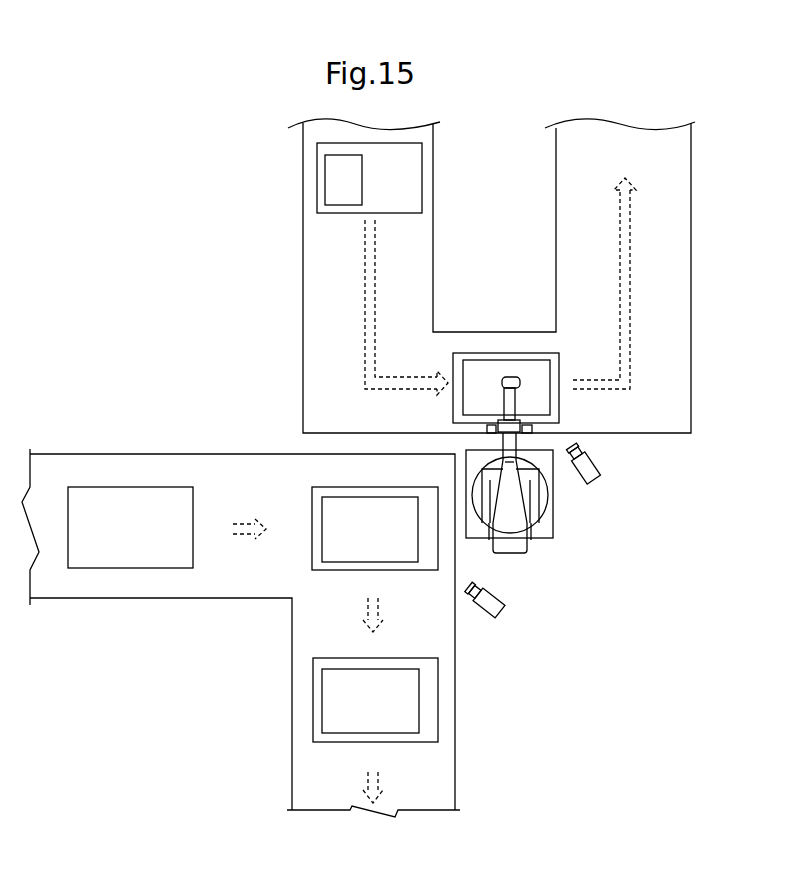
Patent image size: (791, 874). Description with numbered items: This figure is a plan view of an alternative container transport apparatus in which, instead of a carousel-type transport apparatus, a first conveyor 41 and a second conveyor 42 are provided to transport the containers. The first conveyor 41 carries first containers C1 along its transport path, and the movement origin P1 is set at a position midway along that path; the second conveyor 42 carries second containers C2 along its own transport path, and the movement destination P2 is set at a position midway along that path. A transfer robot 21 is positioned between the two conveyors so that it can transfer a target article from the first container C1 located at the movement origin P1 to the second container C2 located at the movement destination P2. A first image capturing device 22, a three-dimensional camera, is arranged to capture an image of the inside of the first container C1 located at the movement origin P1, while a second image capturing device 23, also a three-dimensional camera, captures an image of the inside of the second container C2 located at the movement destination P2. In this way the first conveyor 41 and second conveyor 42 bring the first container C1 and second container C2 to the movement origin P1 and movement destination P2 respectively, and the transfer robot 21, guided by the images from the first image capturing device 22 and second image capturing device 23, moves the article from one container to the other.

The first conveyor 41 is at (318, 313).
The second conveyor 42 is at (77, 462).
The transfer robot 21 is at (561, 522).
The first image capturing device 22 is at (598, 462).
The second image capturing device 23 is at (485, 618).
The first container C1 is at (320, 183).
The second container C2 is at (130, 486).
The movement origin P1 is at (474, 328).
The movement destination P2 is at (375, 470).